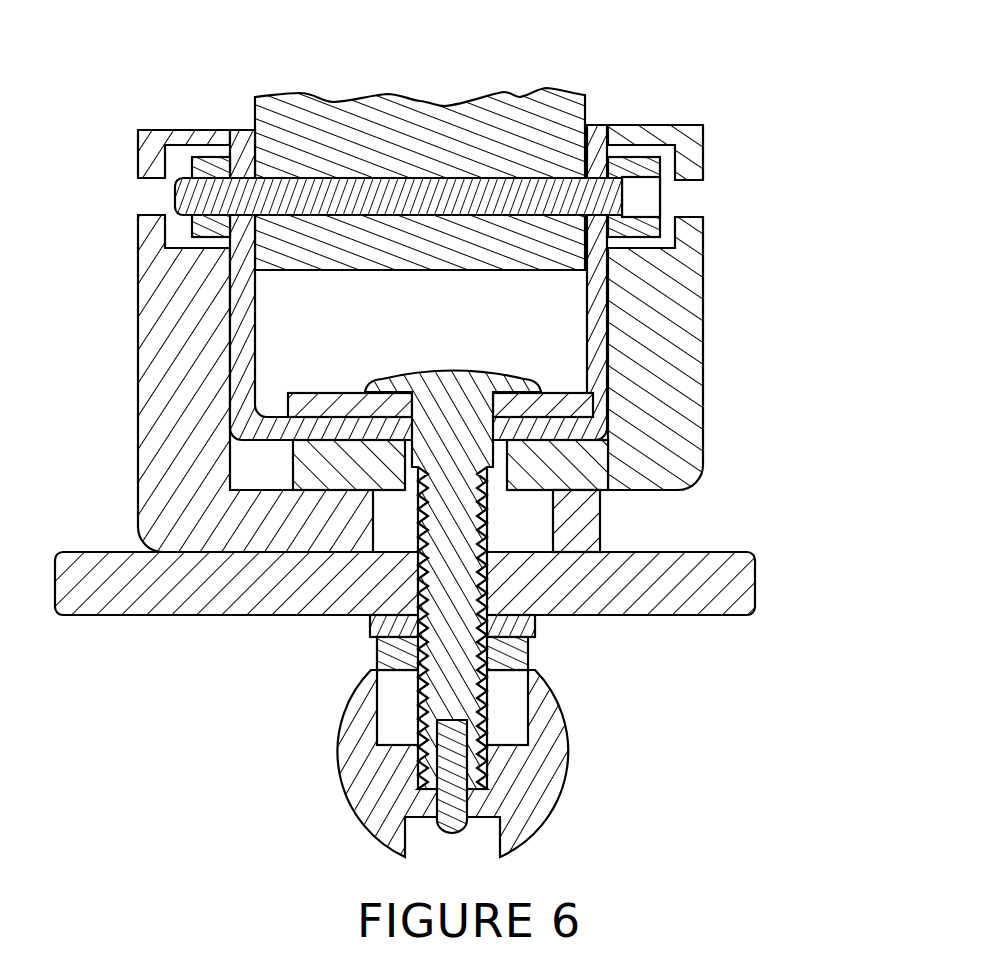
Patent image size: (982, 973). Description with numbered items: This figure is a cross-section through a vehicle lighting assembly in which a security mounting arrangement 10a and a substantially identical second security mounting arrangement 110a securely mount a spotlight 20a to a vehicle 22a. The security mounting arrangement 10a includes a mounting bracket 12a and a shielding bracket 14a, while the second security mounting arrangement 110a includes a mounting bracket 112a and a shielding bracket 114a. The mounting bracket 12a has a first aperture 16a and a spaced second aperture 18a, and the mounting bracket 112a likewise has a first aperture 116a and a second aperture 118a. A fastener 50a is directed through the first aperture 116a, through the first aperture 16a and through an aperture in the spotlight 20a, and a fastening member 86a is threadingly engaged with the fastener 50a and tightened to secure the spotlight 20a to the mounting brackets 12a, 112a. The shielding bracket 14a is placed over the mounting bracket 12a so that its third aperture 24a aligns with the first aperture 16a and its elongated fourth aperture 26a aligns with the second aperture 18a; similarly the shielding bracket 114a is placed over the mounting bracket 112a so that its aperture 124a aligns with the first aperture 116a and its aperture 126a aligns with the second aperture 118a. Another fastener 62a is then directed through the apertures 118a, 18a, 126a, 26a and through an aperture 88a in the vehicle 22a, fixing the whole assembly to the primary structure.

The security mounting arrangement 10a is at (176, 46).
The mounting bracket 12a is at (247, 308).
The shielding bracket 14a is at (180, 385).
The first aperture 16a is at (240, 262).
The second aperture 18a is at (495, 428).
The spotlight 20a is at (447, 155).
The vehicle 22a is at (683, 605).
The third aperture 24a is at (160, 180).
The fourth aperture 26a is at (560, 503).
The fastener 50a is at (480, 185).
The fastener 62a is at (447, 607).
The fastening member 86a is at (207, 155).
The aperture 88a is at (485, 560).
The second security mounting arrangement 110a is at (621, 52).
The mounting bracket 112a is at (678, 270).
The shielding bracket 114a is at (675, 365).
The first aperture 116a is at (608, 128).
The second aperture 118a is at (505, 405).
The aperture 124a is at (690, 180).
The aperture 126a is at (396, 468).